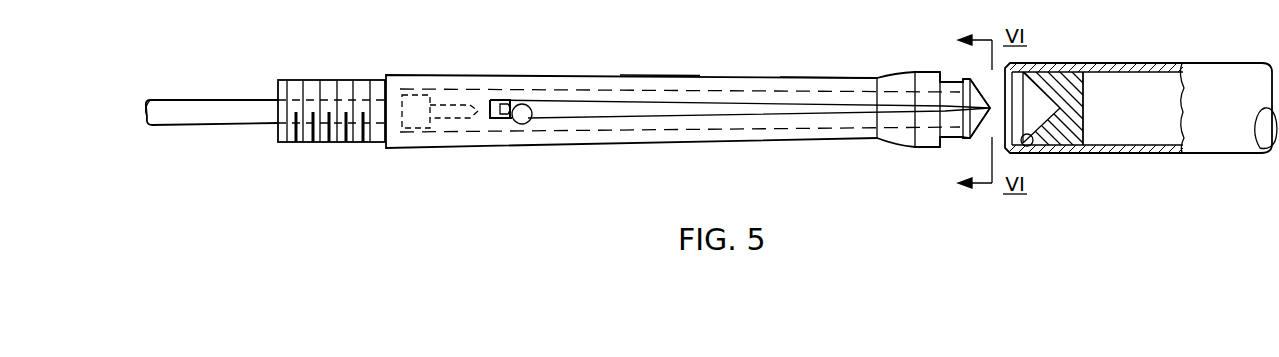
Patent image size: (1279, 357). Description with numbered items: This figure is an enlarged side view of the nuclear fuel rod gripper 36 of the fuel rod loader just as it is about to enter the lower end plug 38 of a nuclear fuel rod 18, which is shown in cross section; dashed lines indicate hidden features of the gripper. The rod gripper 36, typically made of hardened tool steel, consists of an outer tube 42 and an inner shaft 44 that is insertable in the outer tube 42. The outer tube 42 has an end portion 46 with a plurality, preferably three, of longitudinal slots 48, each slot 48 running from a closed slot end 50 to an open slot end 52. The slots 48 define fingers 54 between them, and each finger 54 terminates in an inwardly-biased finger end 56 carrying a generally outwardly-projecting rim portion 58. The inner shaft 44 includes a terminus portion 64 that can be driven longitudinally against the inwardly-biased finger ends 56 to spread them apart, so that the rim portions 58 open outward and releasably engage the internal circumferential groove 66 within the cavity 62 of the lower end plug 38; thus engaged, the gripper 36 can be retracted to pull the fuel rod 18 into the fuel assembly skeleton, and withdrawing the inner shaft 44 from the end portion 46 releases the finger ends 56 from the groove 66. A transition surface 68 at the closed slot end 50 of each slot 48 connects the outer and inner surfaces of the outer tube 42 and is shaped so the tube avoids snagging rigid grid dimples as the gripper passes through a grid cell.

The nuclear fuel rod 18 is at (1170, 38).
The nuclear fuel rod gripper 36 is at (580, 43).
The lower end plug 38 is at (1073, 80).
The outer tube 42 is at (413, 65).
The inner shaft 44 is at (202, 105).
The end portion 46 is at (628, 82).
The longitudinal slot 48 is at (640, 110).
The closed slot end 50 is at (528, 124).
The open slot end 52 is at (993, 98).
The finger 54 is at (812, 78).
The inwardly-biased finger end 56 is at (957, 88).
The rim portion 58 is at (963, 137).
The cavity 62 is at (1050, 98).
The terminus portion 64 is at (458, 118).
The internal circumferential groove 66 is at (1032, 136).
The transition surface 68 is at (503, 105).